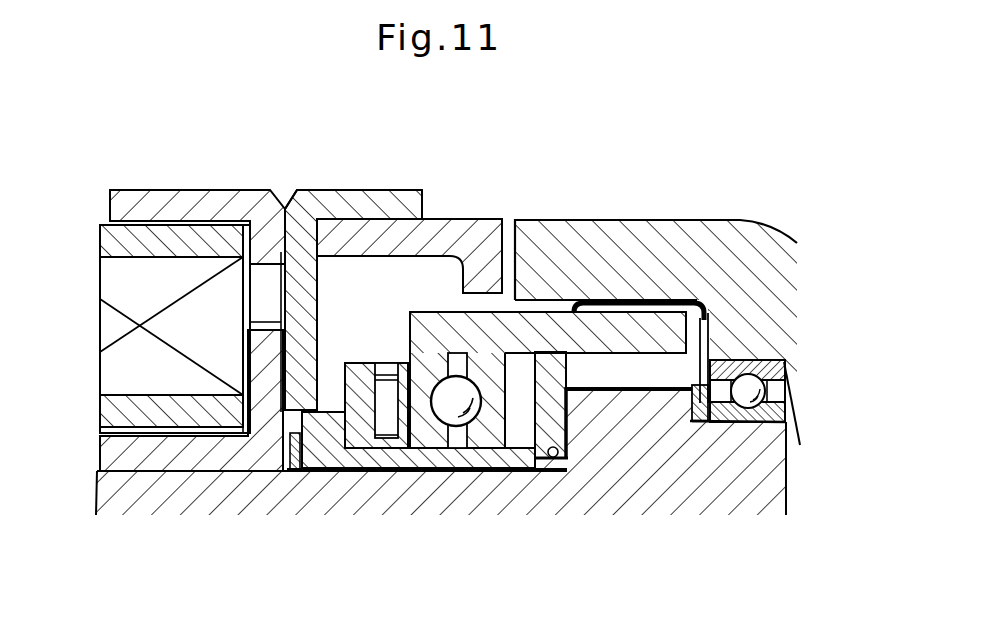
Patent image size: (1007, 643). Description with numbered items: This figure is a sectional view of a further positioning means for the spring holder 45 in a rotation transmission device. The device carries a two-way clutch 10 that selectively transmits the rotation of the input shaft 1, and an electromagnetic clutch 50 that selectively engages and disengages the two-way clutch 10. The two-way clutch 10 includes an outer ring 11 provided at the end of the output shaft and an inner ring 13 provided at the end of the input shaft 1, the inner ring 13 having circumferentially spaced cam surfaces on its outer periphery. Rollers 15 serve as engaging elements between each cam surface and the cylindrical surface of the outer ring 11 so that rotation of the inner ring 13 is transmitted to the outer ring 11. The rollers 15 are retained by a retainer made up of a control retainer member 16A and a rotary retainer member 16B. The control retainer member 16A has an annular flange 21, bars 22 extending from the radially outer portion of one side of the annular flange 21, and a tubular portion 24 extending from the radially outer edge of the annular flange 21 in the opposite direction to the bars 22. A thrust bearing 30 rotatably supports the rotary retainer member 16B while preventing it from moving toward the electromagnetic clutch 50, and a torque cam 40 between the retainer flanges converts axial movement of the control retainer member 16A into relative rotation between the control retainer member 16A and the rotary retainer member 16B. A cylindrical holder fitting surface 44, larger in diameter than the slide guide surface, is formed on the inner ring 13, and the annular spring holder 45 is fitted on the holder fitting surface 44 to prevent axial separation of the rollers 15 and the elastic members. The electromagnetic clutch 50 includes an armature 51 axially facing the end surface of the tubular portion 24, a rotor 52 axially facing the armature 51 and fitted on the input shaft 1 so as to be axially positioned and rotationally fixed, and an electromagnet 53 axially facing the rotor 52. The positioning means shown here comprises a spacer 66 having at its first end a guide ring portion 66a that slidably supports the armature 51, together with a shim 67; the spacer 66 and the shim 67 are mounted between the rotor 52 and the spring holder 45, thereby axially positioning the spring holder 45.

The input shaft 1 is at (448, 470).
The two-way clutch 10 is at (659, 360).
The outer ring 11 is at (708, 230).
The inner ring 13 is at (647, 407).
The rollers 15 is at (668, 372).
The control retainer member 16A is at (459, 205).
The rotary retainer member 16B is at (548, 376).
The annular flange 21 is at (471, 482).
The bars 22 is at (630, 317).
The tubular portion 24 is at (382, 228).
The thrust bearing 30 is at (387, 388).
The torque cam 40 is at (457, 436).
The holder fitting surface 44 is at (553, 460).
The spring holder 45 is at (578, 481).
The electromagnetic clutch 50 is at (178, 186).
The armature 51 is at (303, 262).
The rotor 52 is at (272, 412).
The electromagnet 53 is at (90, 226).
The spacer 66 is at (387, 440).
The guide ring portion 66a is at (327, 437).
The shim 67 is at (293, 471).